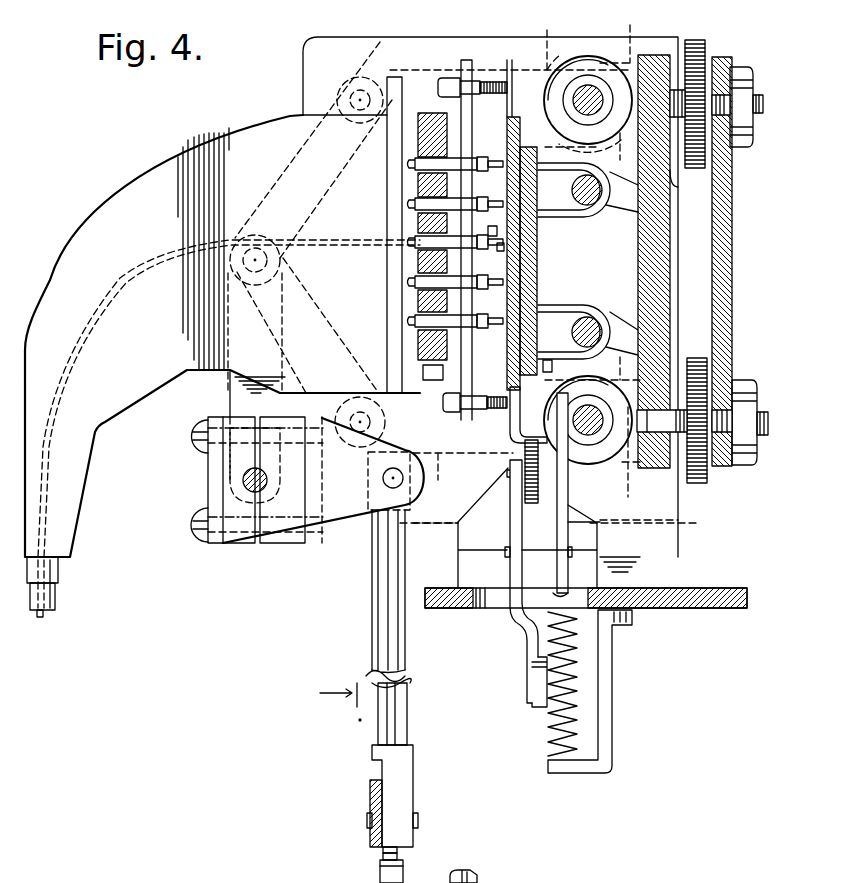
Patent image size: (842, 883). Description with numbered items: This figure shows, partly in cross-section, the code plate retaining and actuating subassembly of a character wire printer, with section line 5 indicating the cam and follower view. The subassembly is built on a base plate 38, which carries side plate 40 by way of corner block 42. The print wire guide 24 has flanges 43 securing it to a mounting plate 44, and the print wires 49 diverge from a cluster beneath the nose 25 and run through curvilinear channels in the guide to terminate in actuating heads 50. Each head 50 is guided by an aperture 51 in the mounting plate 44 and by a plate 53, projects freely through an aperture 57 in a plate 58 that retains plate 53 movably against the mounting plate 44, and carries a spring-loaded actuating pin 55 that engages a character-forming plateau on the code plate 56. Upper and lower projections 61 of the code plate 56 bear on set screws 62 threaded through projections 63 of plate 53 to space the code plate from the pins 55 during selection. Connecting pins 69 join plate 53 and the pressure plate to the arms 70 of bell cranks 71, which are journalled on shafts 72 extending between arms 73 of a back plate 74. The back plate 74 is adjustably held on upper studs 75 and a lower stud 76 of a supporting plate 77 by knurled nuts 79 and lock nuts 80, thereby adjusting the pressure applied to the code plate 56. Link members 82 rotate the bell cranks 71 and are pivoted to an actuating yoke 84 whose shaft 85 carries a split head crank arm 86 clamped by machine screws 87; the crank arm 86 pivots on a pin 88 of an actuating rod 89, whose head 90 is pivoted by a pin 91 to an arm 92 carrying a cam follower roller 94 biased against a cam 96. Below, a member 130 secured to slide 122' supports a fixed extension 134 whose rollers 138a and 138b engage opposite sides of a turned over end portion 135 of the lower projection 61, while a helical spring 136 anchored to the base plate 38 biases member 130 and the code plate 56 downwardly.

The section line 5 is at (330, 702).
The print wire guide 24 is at (105, 205).
The nose 25 is at (54, 594).
The base plate 38 is at (673, 604).
The side plate 40 is at (510, 43).
The corner block 42 is at (667, 538).
The flanges 43 is at (387, 283).
The mounting plate 44 is at (428, 362).
The print wires 49 is at (78, 346).
The actuating head 50 is at (420, 240).
The aperture 51 is at (437, 232).
The plate 53 is at (418, 340).
The actuating pin 55 is at (503, 247).
The code plate 56 is at (520, 264).
The aperture 57 is at (500, 231).
The plate 58 is at (512, 272).
The projections 61 is at (506, 87).
The set screws 62 is at (447, 80).
The projections 63 is at (466, 60).
The connecting pins 69 is at (630, 213).
The arms 70 is at (642, 198).
The bell cranks 71 is at (511, 264).
The shafts 72 is at (588, 85).
The arms 73 is at (611, 262).
The back plate 74 is at (724, 228).
The upper studs 75 is at (762, 95).
The lower stud 76 is at (660, 440).
The supporting plate 77 is at (660, 252).
The knurled nuts 79 is at (697, 45).
The lock nuts 80 is at (740, 67).
The link members 82 is at (285, 167).
The actuating yoke 84 is at (240, 394).
The shaft 85 is at (243, 480).
The split head crank arm 86 is at (340, 522).
The machine screws 87 is at (193, 434).
The pin 88 is at (383, 478).
The actuating rod 89 is at (388, 645).
The head 90 is at (408, 760).
The pin 91 is at (418, 820).
The arm 92 is at (372, 790).
The cam follower roller 94 is at (383, 852).
The cam 96 is at (400, 862).
The slide 122' is at (507, 682).
The member 130 is at (512, 533).
The fixed extension 134 is at (565, 520).
The turned over end portion 135 is at (510, 455).
The helical spring 136 is at (577, 677).
The roller 138a is at (527, 497).
The roller 138b is at (546, 362).